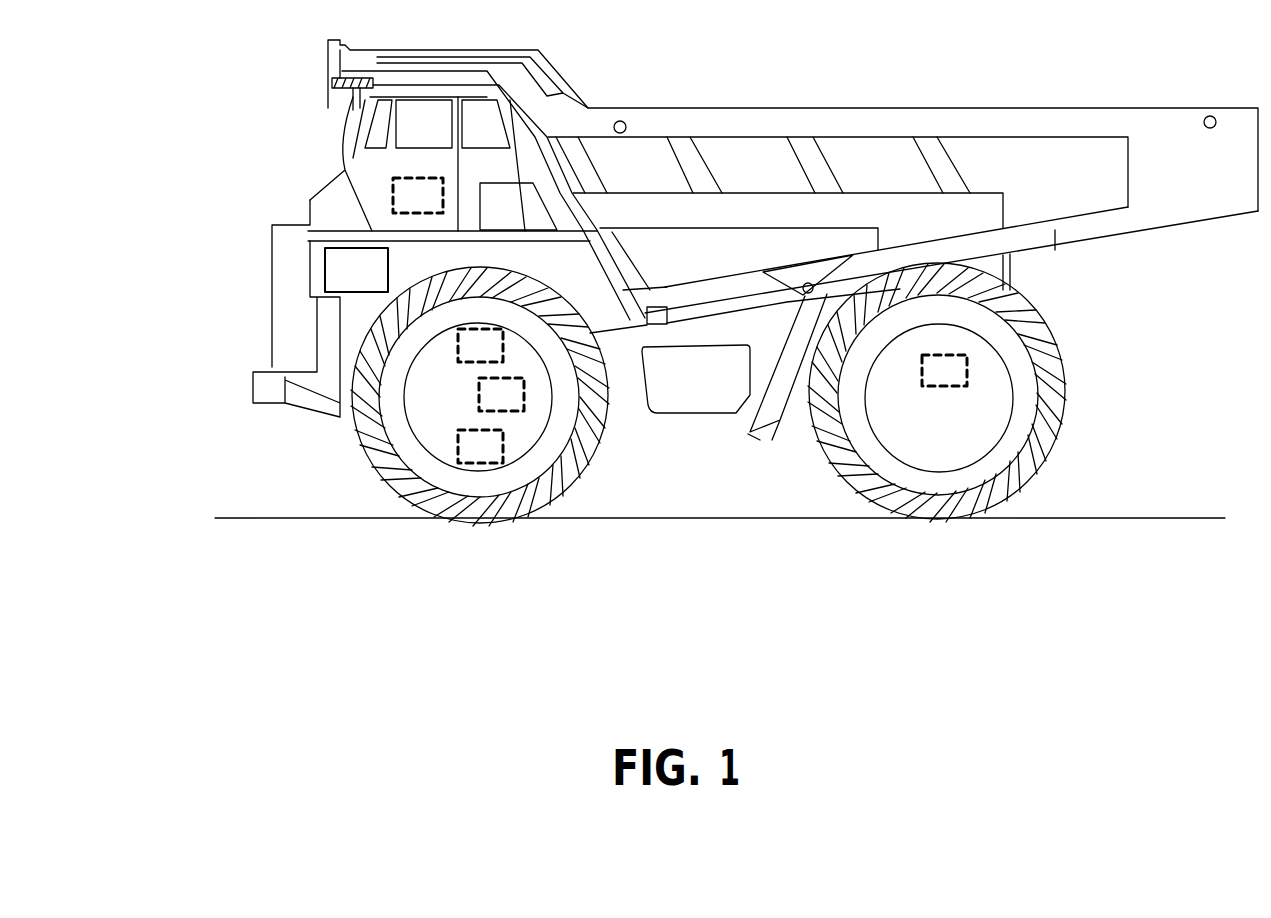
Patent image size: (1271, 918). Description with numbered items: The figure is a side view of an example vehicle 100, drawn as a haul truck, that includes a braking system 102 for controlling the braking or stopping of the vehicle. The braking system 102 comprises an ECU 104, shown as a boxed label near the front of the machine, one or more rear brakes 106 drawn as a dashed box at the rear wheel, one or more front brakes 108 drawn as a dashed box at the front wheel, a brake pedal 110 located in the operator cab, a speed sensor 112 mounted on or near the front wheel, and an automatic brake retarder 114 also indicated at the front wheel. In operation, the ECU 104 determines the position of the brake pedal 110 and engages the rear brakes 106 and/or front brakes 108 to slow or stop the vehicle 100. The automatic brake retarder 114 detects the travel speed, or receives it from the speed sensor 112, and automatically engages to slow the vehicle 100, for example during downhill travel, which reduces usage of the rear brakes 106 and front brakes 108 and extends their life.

The vehicle 100 is at (244, 97).
The braking system 102 is at (218, 242).
The ECU 104 is at (378, 279).
The rear brakes 106 is at (952, 387).
The front brakes 108 is at (501, 346).
The brake pedal 110 is at (388, 200).
The speed sensor 112 is at (521, 409).
The automatic brake retarder 114 is at (500, 461).